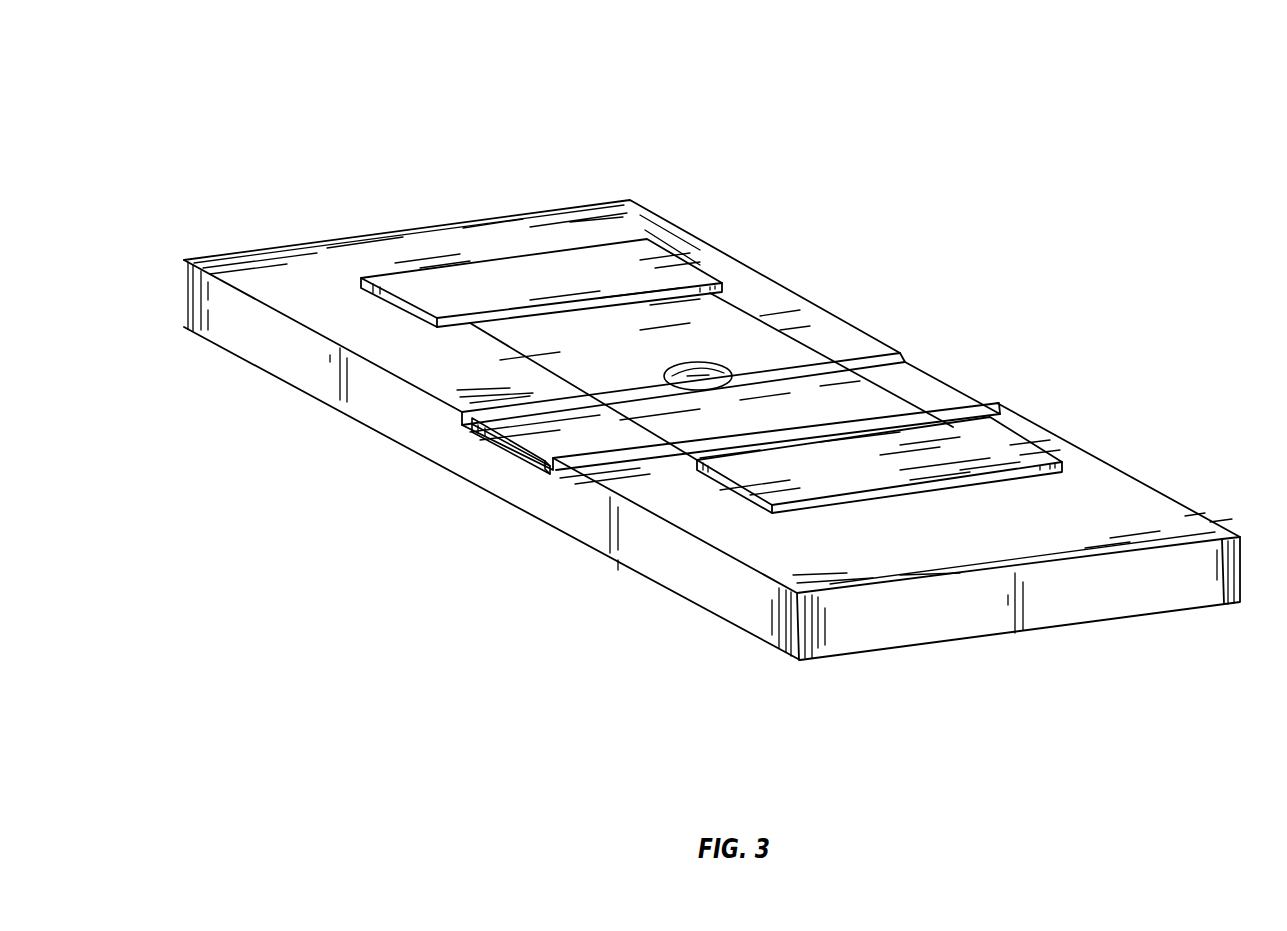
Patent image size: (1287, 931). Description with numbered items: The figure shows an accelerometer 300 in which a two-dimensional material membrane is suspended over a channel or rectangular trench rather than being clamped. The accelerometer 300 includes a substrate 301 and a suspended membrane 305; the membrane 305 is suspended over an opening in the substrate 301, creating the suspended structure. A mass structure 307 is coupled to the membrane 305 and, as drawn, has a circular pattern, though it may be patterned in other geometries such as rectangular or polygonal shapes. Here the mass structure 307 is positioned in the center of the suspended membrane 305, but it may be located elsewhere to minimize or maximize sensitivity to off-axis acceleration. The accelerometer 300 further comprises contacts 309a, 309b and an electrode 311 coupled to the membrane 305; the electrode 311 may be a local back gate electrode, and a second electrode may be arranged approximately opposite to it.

The accelerometer 300 is at (184, 92).
The substrate 301 is at (767, 297).
The suspended membrane 305 is at (517, 342).
The mass structure 307 is at (697, 362).
The contact 309a is at (665, 255).
The contact 309b is at (1000, 435).
The electrode 311 is at (522, 443).